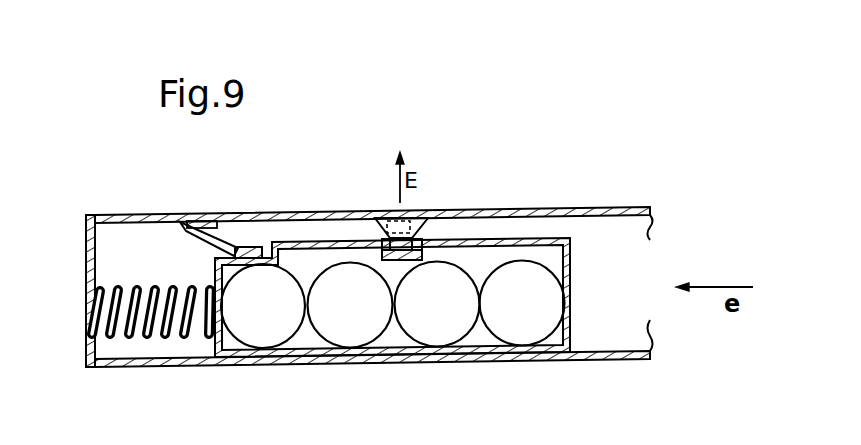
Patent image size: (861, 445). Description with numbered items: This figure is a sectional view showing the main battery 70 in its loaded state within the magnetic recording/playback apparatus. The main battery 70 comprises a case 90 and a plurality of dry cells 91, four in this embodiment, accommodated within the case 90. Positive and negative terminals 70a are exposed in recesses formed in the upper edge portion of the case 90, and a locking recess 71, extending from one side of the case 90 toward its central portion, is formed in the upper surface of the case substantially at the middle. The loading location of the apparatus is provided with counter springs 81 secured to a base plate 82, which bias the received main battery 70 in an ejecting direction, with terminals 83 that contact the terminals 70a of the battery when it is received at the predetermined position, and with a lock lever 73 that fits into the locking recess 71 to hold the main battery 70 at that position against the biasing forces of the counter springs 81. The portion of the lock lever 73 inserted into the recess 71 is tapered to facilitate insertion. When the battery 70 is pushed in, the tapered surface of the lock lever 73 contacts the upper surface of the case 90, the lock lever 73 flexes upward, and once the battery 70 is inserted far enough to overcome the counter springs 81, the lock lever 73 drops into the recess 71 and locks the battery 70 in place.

The main battery 70 is at (598, 266).
The terminals 70a is at (262, 249).
The locking recess 71 is at (428, 218).
The lock lever 73 is at (378, 220).
The counter springs 81 is at (122, 288).
The base plate 82 is at (86, 258).
The terminals 83 is at (216, 213).
The case 90 is at (568, 318).
The dry cells 91 is at (500, 333).